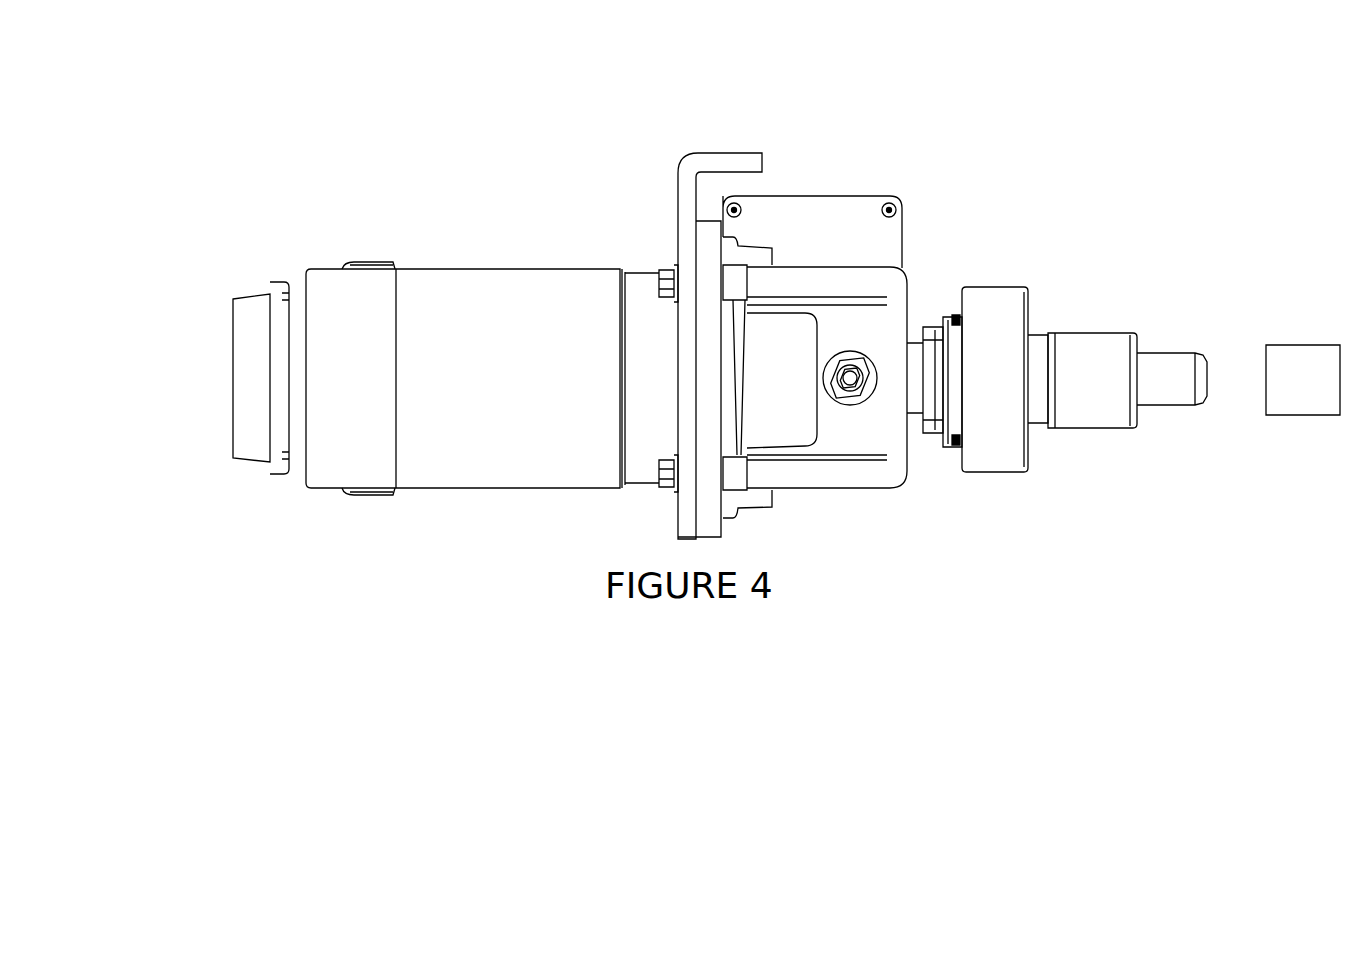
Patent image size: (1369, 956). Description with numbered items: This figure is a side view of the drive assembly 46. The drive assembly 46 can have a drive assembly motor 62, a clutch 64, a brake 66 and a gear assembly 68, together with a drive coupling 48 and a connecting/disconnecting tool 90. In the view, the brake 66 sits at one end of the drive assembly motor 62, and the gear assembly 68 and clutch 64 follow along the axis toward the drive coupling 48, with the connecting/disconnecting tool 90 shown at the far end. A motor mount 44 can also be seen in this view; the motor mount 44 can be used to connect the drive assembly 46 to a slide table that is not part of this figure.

The drive assembly 46 is at (413, 131).
The motor mount 44 is at (840, 220).
The drive coupling 48 is at (1165, 405).
The drive assembly motor 62 is at (508, 489).
The clutch 64 is at (993, 472).
The brake 66 is at (252, 463).
The gear assembly 68 is at (815, 478).
The connecting/disconnecting tool 90 is at (1300, 415).